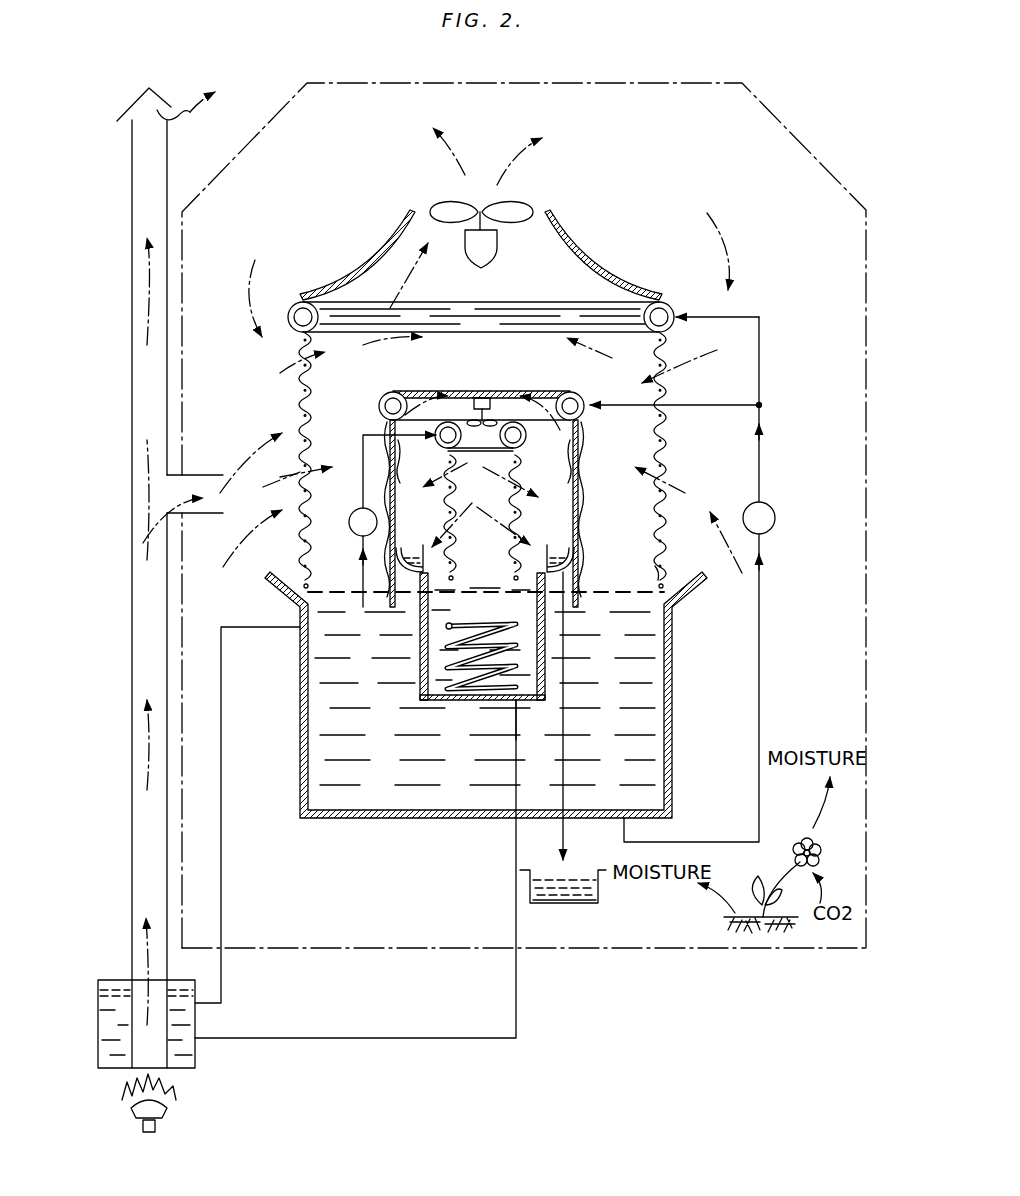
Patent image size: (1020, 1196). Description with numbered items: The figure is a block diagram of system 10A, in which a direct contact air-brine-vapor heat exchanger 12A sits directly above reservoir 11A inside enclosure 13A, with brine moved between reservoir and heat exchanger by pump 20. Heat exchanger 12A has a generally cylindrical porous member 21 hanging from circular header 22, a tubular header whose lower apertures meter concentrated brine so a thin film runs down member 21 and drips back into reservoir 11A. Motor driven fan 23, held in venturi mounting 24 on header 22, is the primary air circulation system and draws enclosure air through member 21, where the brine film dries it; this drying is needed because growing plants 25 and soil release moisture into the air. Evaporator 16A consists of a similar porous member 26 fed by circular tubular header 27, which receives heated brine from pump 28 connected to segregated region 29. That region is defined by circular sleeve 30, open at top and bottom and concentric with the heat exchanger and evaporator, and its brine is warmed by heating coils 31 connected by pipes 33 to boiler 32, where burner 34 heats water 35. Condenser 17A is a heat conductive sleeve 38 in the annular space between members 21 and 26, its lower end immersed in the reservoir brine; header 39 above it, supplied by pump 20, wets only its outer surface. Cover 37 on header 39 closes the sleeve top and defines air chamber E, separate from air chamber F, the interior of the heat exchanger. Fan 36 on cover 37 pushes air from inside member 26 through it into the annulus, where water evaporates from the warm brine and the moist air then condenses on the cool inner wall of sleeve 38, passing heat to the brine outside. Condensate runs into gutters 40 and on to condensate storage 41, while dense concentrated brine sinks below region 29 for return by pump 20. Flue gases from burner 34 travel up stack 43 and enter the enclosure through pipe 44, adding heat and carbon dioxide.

The system 10A is at (390, 968).
The reservoir 11A is at (672, 693).
The heat exchanger 12A is at (601, 247).
The enclosure 13A is at (817, 160).
The evaporator 16A is at (578, 485).
The condenser 17A is at (588, 450).
The pump 20 is at (772, 507).
The porous member 21 is at (665, 515).
The header 22 is at (668, 305).
The motor driven fan 23 is at (535, 190).
The venturi mounting 24 is at (365, 268).
The growing plants 25 is at (823, 856).
The porous member 26 is at (520, 490).
The header 27 is at (533, 441).
The pump 28 is at (352, 527).
The segregated region 29 is at (502, 701).
The circular sleeve 30 is at (420, 672).
The heating coils 31 is at (500, 624).
The boiler 32 is at (195, 1043).
The pipes 33 is at (516, 925).
The burner 34 is at (157, 1127).
The water 35 is at (122, 990).
The fan 36 is at (492, 397).
The cover 37 is at (462, 391).
The heat conductive sleeve 38 is at (385, 470).
The header 39 is at (380, 404).
The gutters 40 is at (425, 545).
The condensate storage 41 is at (598, 888).
The stack 43 is at (130, 707).
The pipe 44 is at (208, 473).
The air chamber E is at (575, 530).
The air chamber F is at (640, 573).